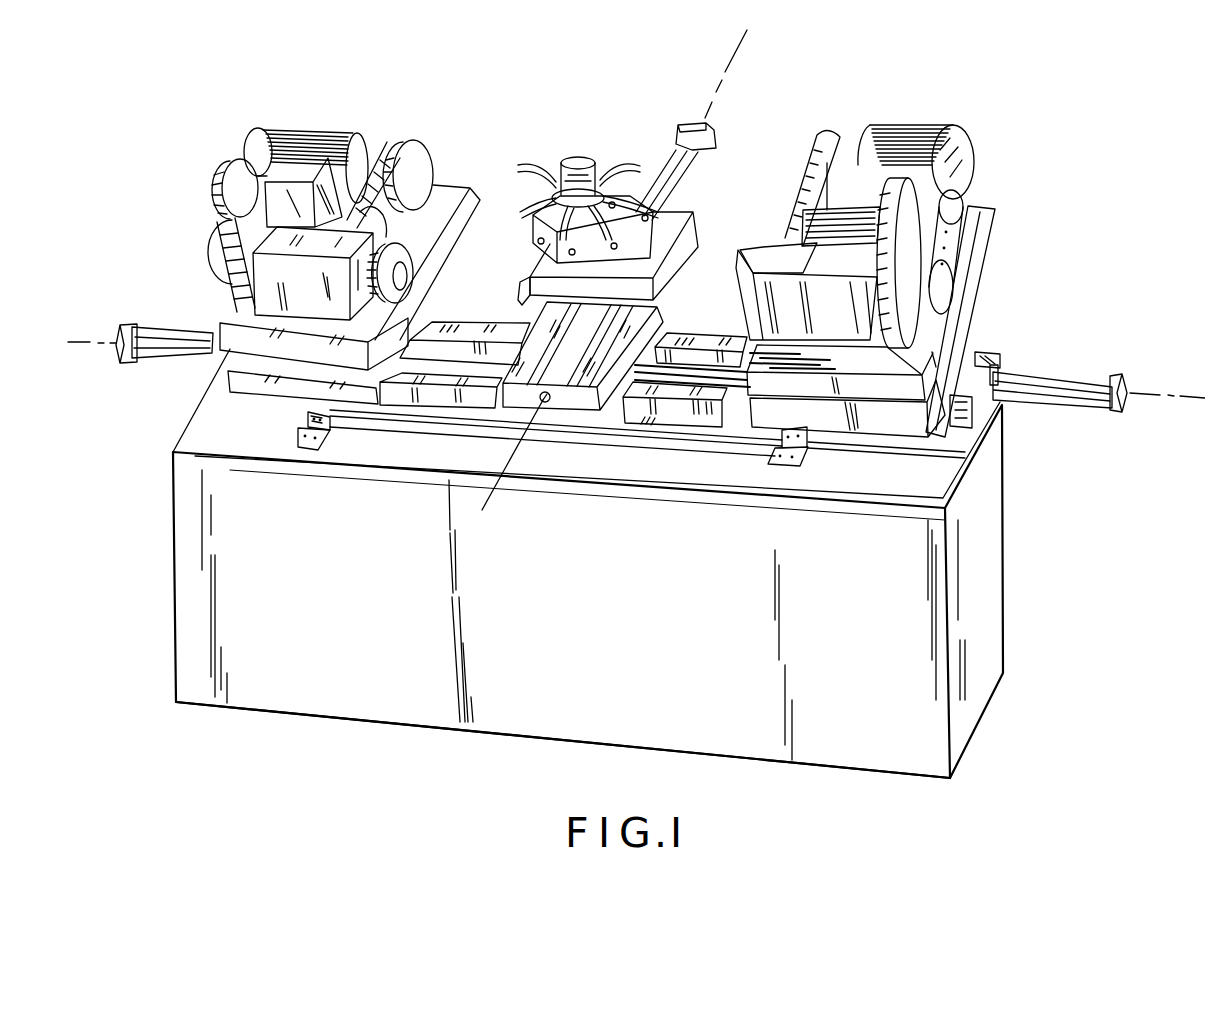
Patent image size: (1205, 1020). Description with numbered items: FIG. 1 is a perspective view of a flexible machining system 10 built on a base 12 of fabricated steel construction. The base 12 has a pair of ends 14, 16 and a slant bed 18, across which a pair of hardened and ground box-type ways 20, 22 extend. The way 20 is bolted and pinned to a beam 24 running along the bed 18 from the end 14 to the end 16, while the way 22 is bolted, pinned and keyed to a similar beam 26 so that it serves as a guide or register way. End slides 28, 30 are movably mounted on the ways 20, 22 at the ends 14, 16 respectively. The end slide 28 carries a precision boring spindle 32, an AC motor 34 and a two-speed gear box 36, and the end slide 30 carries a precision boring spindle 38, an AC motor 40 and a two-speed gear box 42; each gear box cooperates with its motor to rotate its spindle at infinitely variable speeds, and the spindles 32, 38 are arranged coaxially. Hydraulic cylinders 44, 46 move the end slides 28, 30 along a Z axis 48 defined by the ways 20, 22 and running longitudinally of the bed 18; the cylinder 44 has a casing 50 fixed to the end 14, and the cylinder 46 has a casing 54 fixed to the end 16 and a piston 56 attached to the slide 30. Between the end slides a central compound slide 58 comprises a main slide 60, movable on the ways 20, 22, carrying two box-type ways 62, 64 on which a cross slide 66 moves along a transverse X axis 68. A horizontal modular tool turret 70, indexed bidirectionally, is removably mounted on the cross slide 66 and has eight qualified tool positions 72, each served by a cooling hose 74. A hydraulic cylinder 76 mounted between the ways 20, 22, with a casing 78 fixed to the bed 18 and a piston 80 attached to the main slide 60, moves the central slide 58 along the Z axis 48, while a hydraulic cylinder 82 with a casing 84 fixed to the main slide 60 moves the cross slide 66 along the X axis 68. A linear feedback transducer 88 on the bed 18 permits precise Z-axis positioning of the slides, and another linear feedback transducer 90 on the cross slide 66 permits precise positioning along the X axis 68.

The flexible machining system 10 is at (989, 120).
The base 12 is at (568, 735).
The end 14 is at (178, 632).
The end 16 is at (990, 615).
The slant bed 18 is at (852, 488).
The way 20 is at (470, 320).
The way 22 is at (710, 445).
The beam 24 is at (985, 352).
The beam 26 is at (962, 430).
The end slide 28 is at (215, 372).
The end slide 30 is at (988, 250).
The precision boring spindle 32 is at (390, 250).
The AC motor 34 is at (336, 128).
The two-speed gear box 36 is at (293, 128).
The precision boring spindle 38 is at (742, 246).
The AC motor 40 is at (872, 134).
The two-speed gear box 42 is at (858, 174).
The hydraulic cylinder 44 is at (126, 325).
The hydraulic cylinder 46 is at (1120, 373).
The Z axis 48 is at (1162, 390).
The casing 50 is at (195, 328).
The casing 54 is at (1038, 372).
The piston 56 is at (1000, 354).
The central compound slide 58 is at (585, 430).
The main slide 60 is at (572, 388).
The way 62 is at (540, 330).
The way 64 is at (622, 335).
The cross slide 66 is at (690, 207).
The X axis 68 is at (725, 65).
The horizontal modular tool turret 70 is at (586, 139).
The tool positions 72 is at (616, 250).
The cooling hoses 74 is at (550, 170).
The hydraulic cylinder 76 is at (722, 350).
The casing 78 is at (680, 408).
The piston 80 is at (640, 402).
The hydraulic cylinder 82 is at (692, 120).
The casing 84 is at (672, 142).
The linear feedback transducer 88 is at (343, 423).
The linear feedback transducer 90 is at (518, 268).